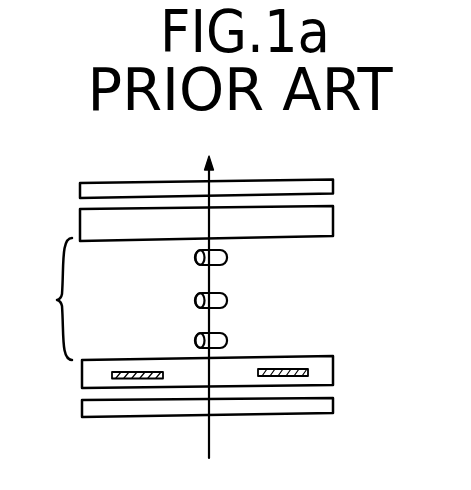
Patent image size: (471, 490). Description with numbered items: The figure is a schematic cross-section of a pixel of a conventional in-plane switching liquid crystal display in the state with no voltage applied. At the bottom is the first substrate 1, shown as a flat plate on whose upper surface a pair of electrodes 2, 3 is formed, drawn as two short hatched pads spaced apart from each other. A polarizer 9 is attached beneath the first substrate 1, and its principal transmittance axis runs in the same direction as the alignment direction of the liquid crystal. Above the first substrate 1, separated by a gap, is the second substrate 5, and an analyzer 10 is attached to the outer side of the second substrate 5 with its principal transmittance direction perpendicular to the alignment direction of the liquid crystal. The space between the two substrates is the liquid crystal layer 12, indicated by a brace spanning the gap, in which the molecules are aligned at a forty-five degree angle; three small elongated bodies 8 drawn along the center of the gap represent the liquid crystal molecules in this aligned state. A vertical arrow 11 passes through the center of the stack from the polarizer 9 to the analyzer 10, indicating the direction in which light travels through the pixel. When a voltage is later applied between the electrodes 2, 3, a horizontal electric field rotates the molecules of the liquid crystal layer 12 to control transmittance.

The first substrate 1 is at (98, 380).
The electrode 2 is at (132, 372).
The electrode 3 is at (302, 369).
The second substrate 5 is at (318, 214).
The spacer beads 8 is at (227, 257).
The polarizer 9 is at (320, 403).
The analyzer 10 is at (303, 193).
The optical axis 11 is at (209, 433).
The liquid crystal layer 12 is at (44, 299).